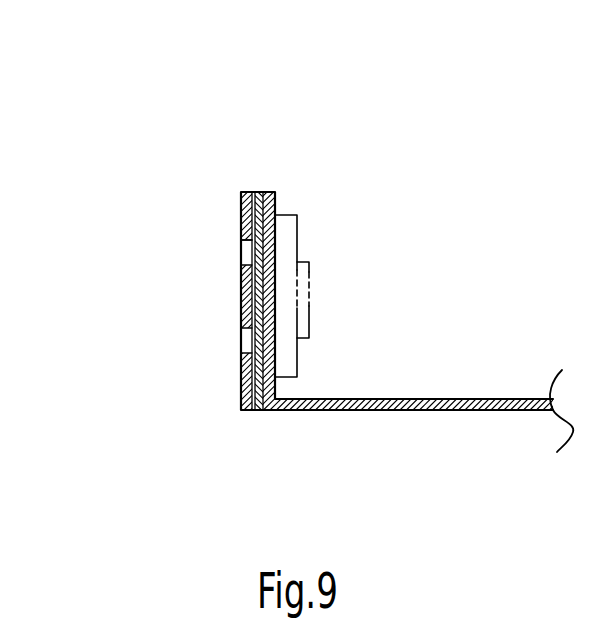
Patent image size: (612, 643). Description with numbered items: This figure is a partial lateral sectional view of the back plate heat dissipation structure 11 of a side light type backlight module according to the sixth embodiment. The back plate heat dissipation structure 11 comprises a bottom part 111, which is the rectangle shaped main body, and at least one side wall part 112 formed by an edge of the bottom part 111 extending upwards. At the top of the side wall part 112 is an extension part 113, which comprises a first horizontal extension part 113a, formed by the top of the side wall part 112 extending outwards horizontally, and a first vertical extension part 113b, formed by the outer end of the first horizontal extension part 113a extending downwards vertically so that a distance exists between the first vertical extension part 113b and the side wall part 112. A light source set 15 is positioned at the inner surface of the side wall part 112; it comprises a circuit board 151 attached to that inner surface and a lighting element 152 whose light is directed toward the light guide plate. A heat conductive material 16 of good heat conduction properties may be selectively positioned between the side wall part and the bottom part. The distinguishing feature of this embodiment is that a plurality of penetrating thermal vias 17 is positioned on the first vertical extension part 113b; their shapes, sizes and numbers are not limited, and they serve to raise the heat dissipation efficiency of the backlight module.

The back plate heat dissipation structure 11 is at (173, 430).
The light source set 15 is at (318, 236).
The heat conductive material 16 is at (241, 367).
The thermal vias 17 is at (241, 262).
The bottom part 111 is at (498, 410).
The side wall part 112 is at (272, 384).
The extension part 113 is at (212, 224).
The first horizontal extension part 113a is at (262, 193).
The first vertical extension part 113b is at (241, 307).
The circuit board 151 is at (290, 222).
The lighting element 152 is at (310, 298).